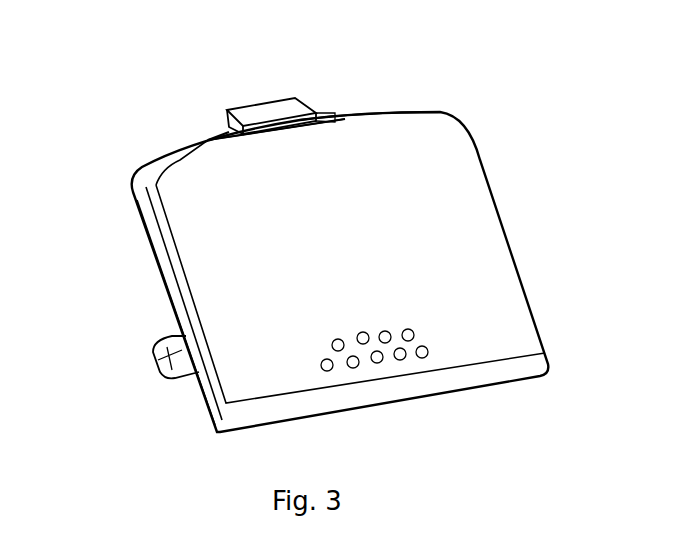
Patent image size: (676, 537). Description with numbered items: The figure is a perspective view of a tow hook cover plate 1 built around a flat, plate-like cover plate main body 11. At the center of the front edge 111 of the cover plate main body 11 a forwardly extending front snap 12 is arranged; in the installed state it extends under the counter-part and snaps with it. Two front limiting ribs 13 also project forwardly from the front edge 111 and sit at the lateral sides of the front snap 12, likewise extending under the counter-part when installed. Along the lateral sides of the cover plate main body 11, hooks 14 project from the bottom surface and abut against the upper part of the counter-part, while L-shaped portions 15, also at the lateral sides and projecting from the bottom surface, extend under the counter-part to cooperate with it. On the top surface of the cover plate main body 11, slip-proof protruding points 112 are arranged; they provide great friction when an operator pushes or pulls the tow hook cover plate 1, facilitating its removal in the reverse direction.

The tow hook cover plate 1 is at (136, 93).
The cover plate main body 11 is at (477, 217).
The front edge 111 is at (378, 113).
The slip-proof protruding points 112 is at (362, 338).
The front snap 12 is at (268, 117).
The front limiting ribs 13 is at (217, 130).
The hooks 14 is at (142, 257).
The L-shaped portions 15 is at (170, 357).